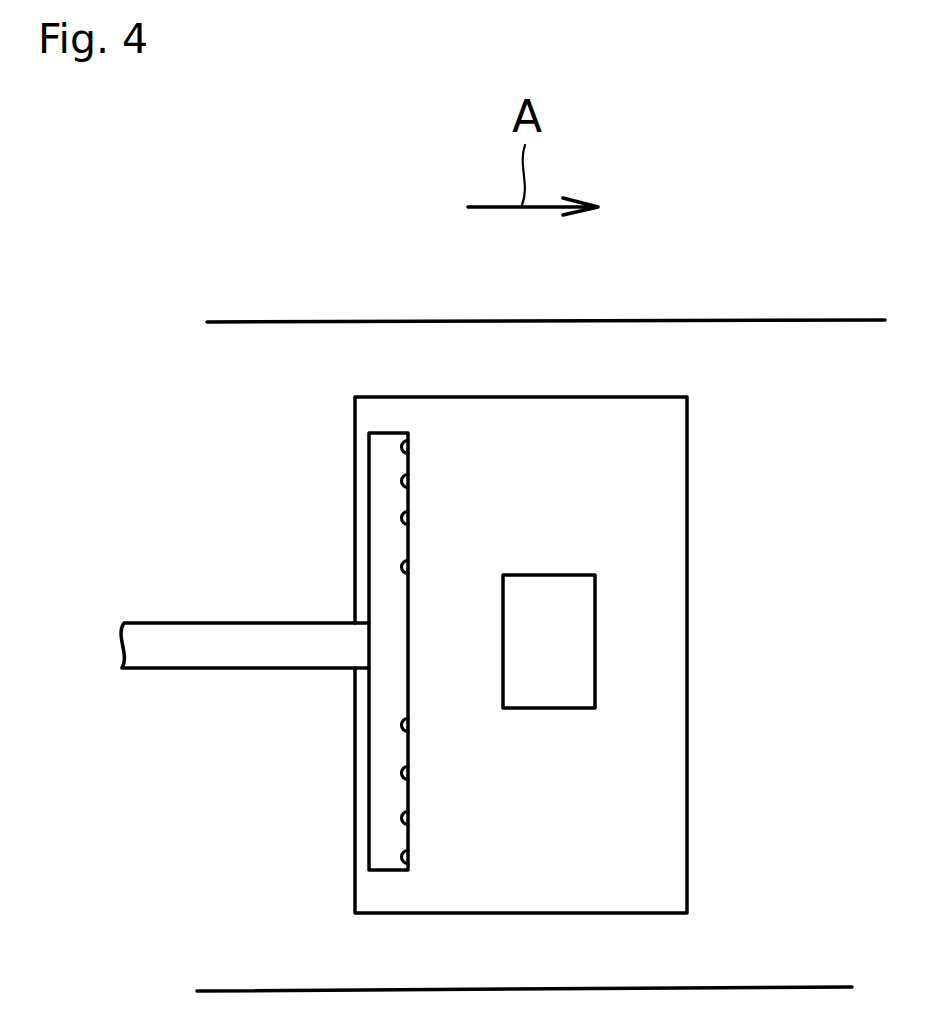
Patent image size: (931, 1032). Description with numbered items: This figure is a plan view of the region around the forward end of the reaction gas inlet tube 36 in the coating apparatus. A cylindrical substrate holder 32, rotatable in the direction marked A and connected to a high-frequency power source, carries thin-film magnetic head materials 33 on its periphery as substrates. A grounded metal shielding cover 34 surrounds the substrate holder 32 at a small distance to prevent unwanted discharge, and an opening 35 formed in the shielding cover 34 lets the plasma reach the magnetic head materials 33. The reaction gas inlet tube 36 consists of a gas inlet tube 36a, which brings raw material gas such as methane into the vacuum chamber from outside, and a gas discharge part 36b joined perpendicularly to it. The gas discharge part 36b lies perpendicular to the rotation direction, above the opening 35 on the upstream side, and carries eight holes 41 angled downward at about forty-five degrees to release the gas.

The substrate holder 32 is at (583, 802).
The thin-film magnetic head material 33 is at (560, 603).
The shielding cover 34 is at (828, 345).
The opening 35 is at (667, 438).
The reaction gas inlet tube 36 is at (264, 651).
The gas inlet tube 36a is at (173, 647).
The gas discharge part 36b is at (358, 820).
The holes 41 is at (410, 725).